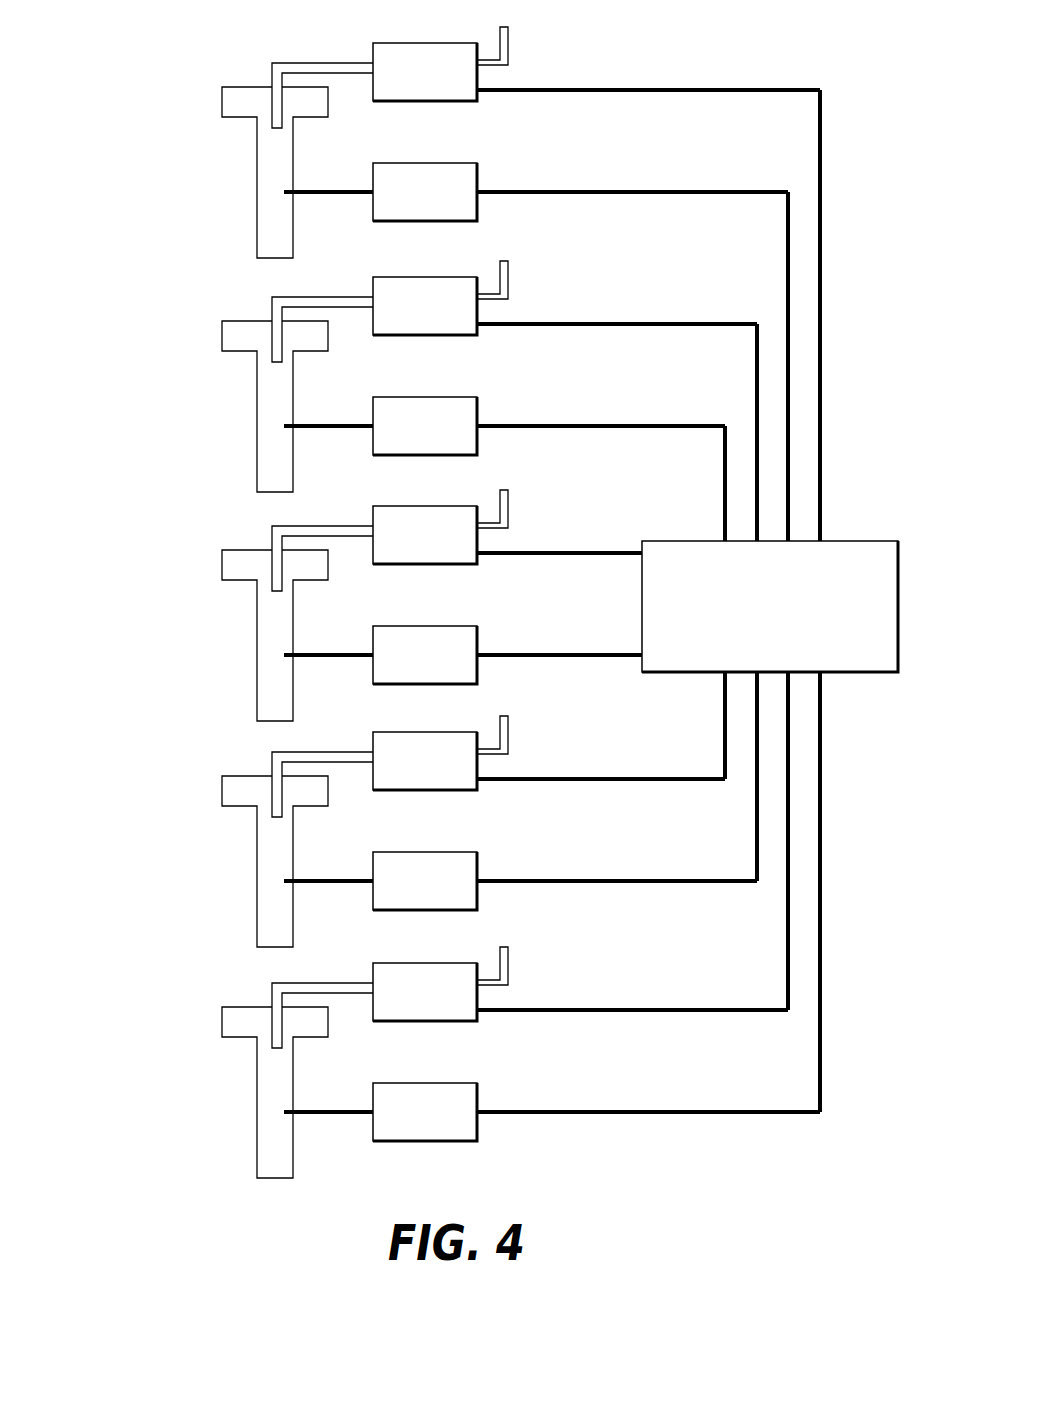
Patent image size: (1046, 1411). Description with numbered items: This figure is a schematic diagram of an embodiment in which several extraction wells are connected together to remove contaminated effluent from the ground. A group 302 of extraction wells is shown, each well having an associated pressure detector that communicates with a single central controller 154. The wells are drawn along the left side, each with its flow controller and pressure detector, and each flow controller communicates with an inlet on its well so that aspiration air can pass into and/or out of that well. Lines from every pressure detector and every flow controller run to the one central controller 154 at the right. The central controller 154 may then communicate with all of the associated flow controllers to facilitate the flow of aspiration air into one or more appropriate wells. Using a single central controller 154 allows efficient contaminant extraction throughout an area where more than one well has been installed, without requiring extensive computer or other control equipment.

The group of extraction wells 302 is at (83, 153).
The central controller 154 is at (858, 555).